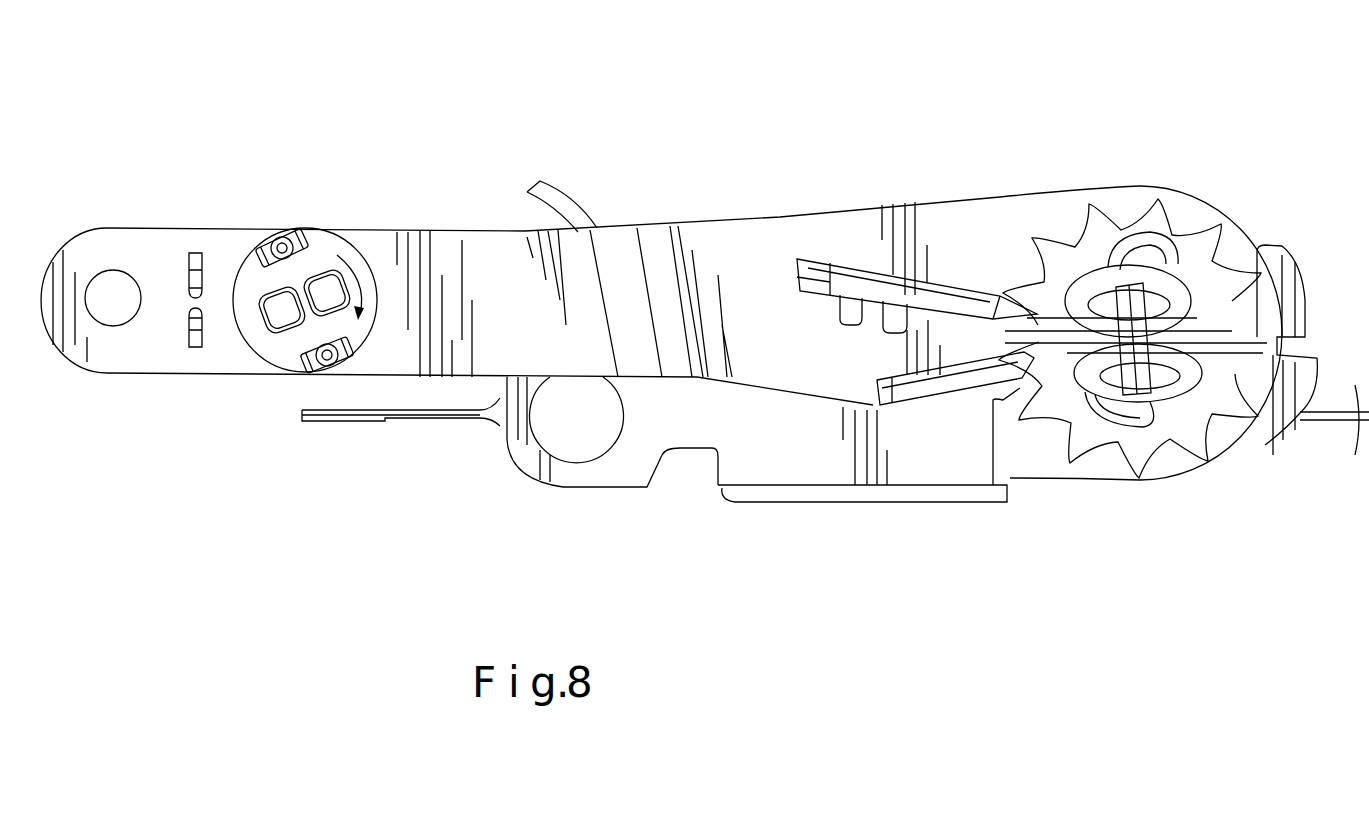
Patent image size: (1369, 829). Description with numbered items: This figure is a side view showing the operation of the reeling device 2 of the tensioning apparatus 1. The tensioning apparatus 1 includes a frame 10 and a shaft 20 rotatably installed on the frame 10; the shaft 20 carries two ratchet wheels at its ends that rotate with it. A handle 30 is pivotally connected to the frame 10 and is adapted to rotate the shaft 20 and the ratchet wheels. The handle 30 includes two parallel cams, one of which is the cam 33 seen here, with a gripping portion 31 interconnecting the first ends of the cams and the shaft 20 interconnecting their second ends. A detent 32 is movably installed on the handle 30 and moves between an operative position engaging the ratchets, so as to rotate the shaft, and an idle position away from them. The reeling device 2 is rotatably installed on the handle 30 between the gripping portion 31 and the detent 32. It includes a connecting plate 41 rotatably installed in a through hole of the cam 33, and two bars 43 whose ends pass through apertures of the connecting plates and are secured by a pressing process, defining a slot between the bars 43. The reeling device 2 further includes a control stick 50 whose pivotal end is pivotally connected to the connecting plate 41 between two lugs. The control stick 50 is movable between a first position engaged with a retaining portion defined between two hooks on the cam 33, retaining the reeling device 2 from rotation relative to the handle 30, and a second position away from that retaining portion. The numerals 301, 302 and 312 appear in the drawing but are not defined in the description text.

The tensioning apparatus 1 is at (700, 572).
The reeling device 2 is at (313, 100).
The frame 10 is at (935, 470).
The shaft 20 is at (1130, 400).
The handle 30 is at (365, 408).
The gripping portion 31 is at (107, 282).
The detent 32 is at (552, 195).
The cam 33 is at (443, 242).
The connecting plate 41 is at (364, 222).
The bar 43 is at (278, 312).
The control stick 50 is at (278, 246).
The first end of handle 301 is at (130, 183).
The second end of handle 302 is at (1168, 160).
The slot 312 is at (190, 290).